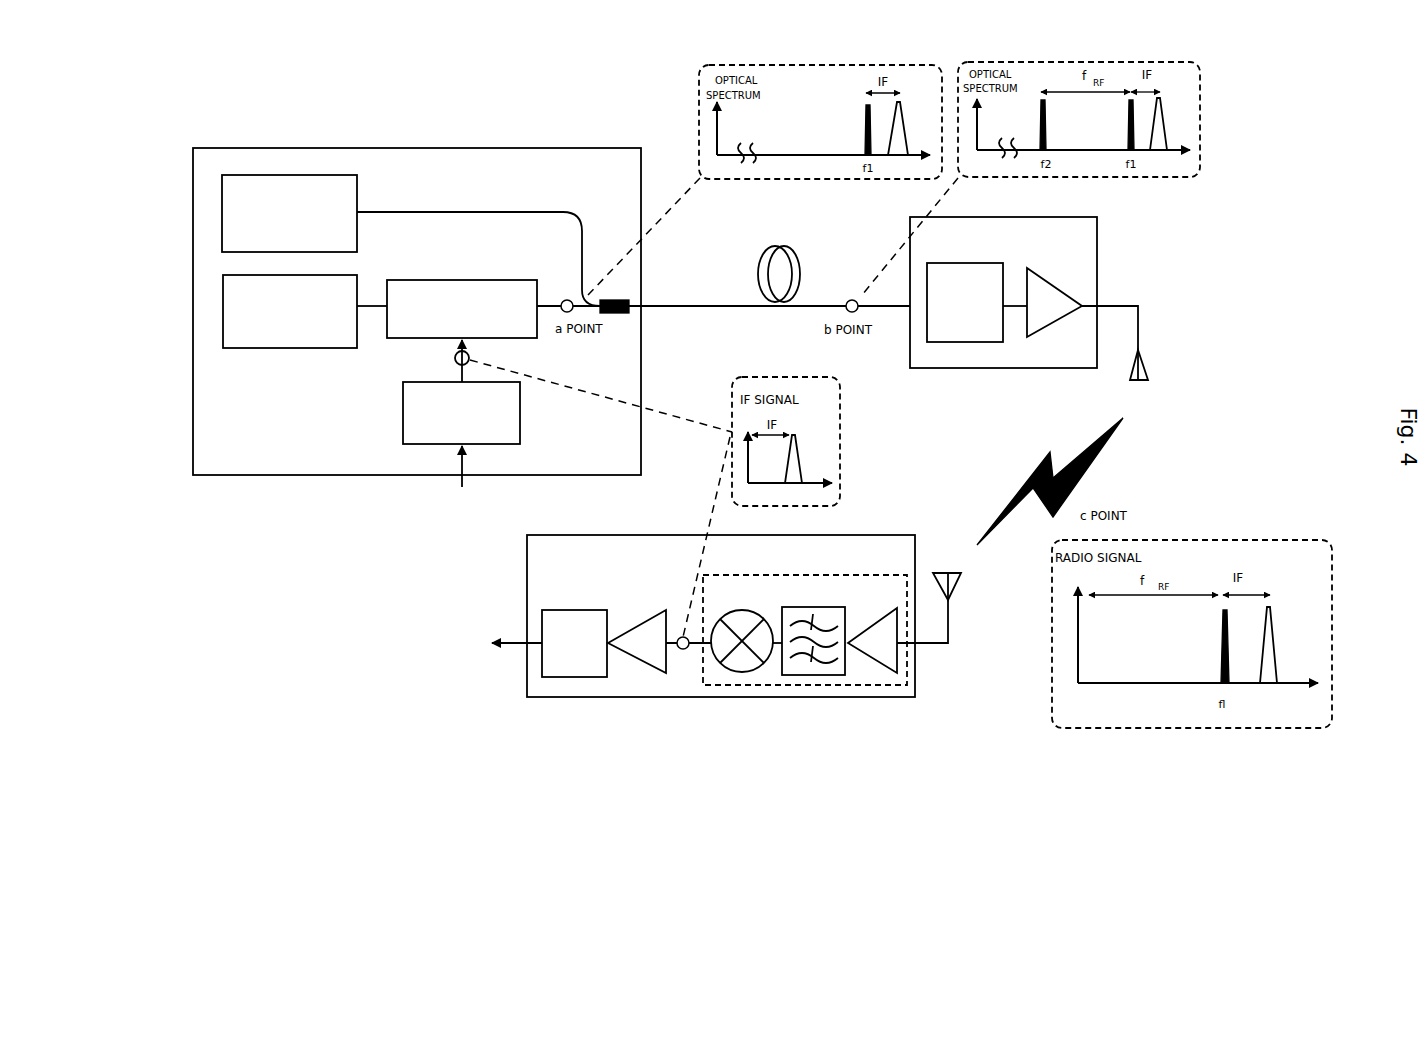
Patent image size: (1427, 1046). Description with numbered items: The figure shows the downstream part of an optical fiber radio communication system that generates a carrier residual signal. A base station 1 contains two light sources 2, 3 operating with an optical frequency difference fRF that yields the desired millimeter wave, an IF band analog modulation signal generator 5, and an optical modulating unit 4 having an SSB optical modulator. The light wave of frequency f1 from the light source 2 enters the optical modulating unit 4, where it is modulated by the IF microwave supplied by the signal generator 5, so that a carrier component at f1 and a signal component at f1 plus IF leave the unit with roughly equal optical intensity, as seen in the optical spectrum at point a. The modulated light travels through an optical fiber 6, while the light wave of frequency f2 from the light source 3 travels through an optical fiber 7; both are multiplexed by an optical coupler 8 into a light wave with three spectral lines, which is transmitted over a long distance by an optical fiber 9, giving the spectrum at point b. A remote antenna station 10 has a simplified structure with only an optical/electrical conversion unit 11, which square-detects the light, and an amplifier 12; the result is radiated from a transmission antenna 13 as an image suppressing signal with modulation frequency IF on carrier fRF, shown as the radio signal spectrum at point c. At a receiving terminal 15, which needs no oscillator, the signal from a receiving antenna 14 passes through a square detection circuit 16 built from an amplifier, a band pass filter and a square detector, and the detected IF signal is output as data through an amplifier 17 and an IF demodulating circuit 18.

The base station 1 is at (337, 147).
The light source 2 is at (258, 318).
The light source 3 is at (257, 215).
The optical modulating unit 4 is at (403, 317).
The IF band analog modulation signal generator 5 is at (433, 427).
The optical fiber 6 is at (547, 305).
The optical fiber 7 is at (440, 213).
The optical coupler 8 is at (622, 300).
The optical fiber 9 is at (797, 260).
The remote antenna station 10 is at (1097, 260).
The optical/electrical conversion unit 11 is at (960, 325).
The amplifier 12 is at (1070, 290).
The transmission antenna 13 is at (1148, 373).
The receiving antenna 14 is at (953, 590).
The receiving terminal 15 is at (525, 663).
The square detection circuit 16 is at (862, 683).
The amplifier 17 is at (648, 643).
The IF demodulating circuit 18 is at (573, 678).